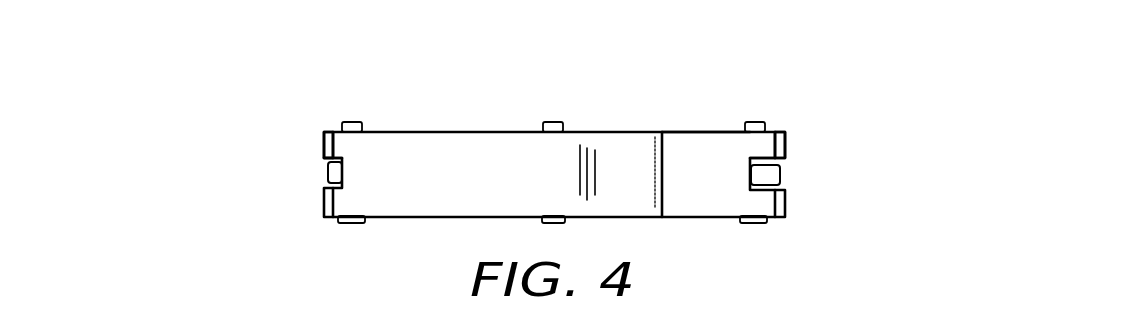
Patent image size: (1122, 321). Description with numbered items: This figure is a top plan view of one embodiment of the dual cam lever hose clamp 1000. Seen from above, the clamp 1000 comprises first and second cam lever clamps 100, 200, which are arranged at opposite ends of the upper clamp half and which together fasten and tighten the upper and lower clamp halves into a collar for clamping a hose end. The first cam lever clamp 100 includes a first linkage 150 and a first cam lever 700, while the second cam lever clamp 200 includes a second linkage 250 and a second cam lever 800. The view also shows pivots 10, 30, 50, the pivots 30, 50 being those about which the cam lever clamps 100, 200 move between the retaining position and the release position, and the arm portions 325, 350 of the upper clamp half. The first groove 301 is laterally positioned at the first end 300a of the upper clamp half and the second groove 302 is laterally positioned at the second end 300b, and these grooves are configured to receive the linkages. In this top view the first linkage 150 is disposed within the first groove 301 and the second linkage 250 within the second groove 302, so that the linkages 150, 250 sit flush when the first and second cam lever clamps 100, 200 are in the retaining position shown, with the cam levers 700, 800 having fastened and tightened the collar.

The dual cam lever hose clamp 1000 is at (275, 58).
The first cam lever clamp 100 is at (832, 207).
The second cam lever clamp 200 is at (275, 205).
The pivot 10 is at (547, 122).
The pivot 30 is at (366, 128).
The pivot 50 is at (746, 127).
The first linkage 150 is at (781, 171).
The second linkage 250 is at (328, 168).
The first end of upper clamp half 300a is at (786, 200).
The second end of upper clamp half 300b is at (323, 200).
The first groove 301 is at (797, 160).
The second groove 302 is at (307, 158).
The arm portion 325 is at (315, 133).
The arm portion 350 is at (785, 142).
The first cam lever 700 is at (693, 162).
The second cam lever 800 is at (478, 163).